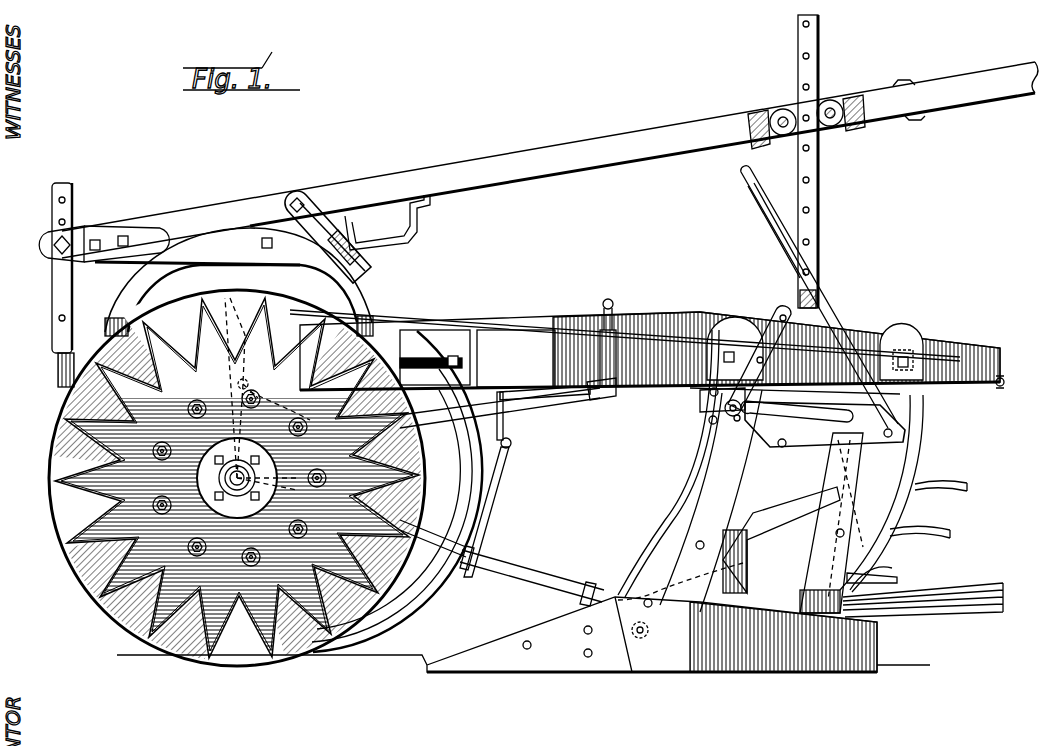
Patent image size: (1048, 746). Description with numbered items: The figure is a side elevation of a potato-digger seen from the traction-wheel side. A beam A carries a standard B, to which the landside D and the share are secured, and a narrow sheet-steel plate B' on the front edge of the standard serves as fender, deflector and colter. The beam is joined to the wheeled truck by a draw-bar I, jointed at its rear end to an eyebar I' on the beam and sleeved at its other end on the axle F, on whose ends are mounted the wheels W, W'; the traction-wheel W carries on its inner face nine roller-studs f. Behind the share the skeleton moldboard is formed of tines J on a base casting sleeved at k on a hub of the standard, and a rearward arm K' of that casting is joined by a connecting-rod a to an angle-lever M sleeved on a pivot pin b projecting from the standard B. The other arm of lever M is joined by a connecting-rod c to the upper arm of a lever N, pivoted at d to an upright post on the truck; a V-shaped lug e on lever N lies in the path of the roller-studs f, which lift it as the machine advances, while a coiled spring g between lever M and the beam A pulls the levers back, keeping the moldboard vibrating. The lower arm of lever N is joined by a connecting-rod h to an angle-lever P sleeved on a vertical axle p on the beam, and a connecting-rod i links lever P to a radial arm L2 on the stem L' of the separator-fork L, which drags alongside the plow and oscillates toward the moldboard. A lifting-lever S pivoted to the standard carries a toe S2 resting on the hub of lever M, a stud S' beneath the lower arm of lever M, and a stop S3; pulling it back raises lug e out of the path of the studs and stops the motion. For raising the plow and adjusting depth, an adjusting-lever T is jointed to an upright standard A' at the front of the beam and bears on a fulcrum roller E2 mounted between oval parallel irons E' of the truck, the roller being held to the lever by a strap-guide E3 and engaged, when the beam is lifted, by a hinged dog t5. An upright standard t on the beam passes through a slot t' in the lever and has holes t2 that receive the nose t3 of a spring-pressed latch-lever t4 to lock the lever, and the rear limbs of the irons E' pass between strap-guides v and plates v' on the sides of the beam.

The adjusting-lever T is at (520, 152).
The upright standard t is at (832, 161).
The vertical slot t' is at (772, 111).
The series of holes t2 is at (812, 180).
The nose t3 is at (845, 122).
The latch-lever t4 is at (914, 82).
The hinged dog t5 is at (312, 196).
The fulcrum roller E2 is at (268, 236).
The strap-guide E3 is at (414, 228).
The vertical parallel irons E' is at (260, 282).
The upright standard A' is at (40, 285).
The traction-wheel W is at (231, 478).
The wheel W' is at (398, 491).
The axle F is at (226, 470).
The roller-studs f is at (152, 447).
The V-shaped lug e is at (280, 407).
The pivot d is at (236, 385).
The lever N is at (232, 371).
The connecting-rod c is at (516, 326).
The vertical axle p is at (620, 336).
The beam A is at (516, 358).
The metallic plates v' is at (435, 357).
The strap-guides v is at (451, 352).
The angle-lever P is at (616, 392).
The draw-bar I is at (500, 414).
The eyebar I' is at (550, 414).
The connecting-rod h is at (505, 425).
The connecting-rod i is at (512, 452).
The radial arm L2 is at (490, 510).
The supporting-stem L' is at (532, 567).
The landside D is at (678, 634).
The sleeve k is at (660, 630).
The standard B is at (813, 500).
The fender plate B' is at (668, 463).
The connecting-rod a is at (831, 523).
The lifting-lever S is at (813, 316).
The angle-lever M is at (823, 417).
The pivot pin b is at (724, 407).
The stud S' is at (780, 460).
The toe S2 is at (751, 430).
The stop S3 is at (884, 340).
The coiled spring g is at (995, 386).
The tines J is at (952, 490).
The arm K' is at (879, 566).
The separator-fork L is at (923, 615).